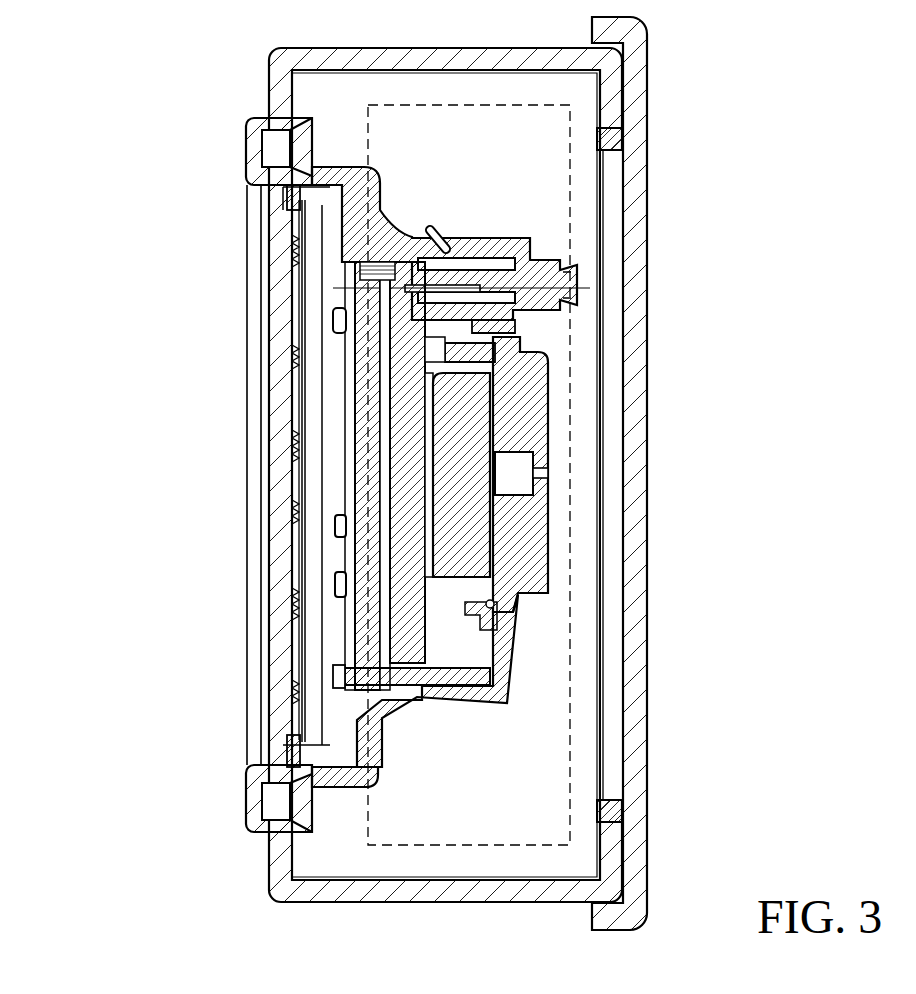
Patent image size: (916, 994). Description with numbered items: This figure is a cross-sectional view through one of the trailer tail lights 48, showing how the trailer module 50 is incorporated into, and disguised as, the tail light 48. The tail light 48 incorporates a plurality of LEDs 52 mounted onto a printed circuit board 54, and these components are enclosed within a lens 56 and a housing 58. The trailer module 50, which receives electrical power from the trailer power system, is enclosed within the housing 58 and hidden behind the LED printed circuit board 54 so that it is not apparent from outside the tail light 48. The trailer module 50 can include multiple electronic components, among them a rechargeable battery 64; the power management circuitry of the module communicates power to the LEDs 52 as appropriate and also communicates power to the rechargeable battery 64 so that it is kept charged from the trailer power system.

The tail light 48 is at (200, 604).
The trailer module 50 is at (368, 120).
The LEDs 52 is at (343, 320).
The printed circuit board 54 is at (350, 408).
The lens 56 is at (277, 672).
The housing 58 is at (448, 317).
The rechargeable battery 64 is at (467, 575).